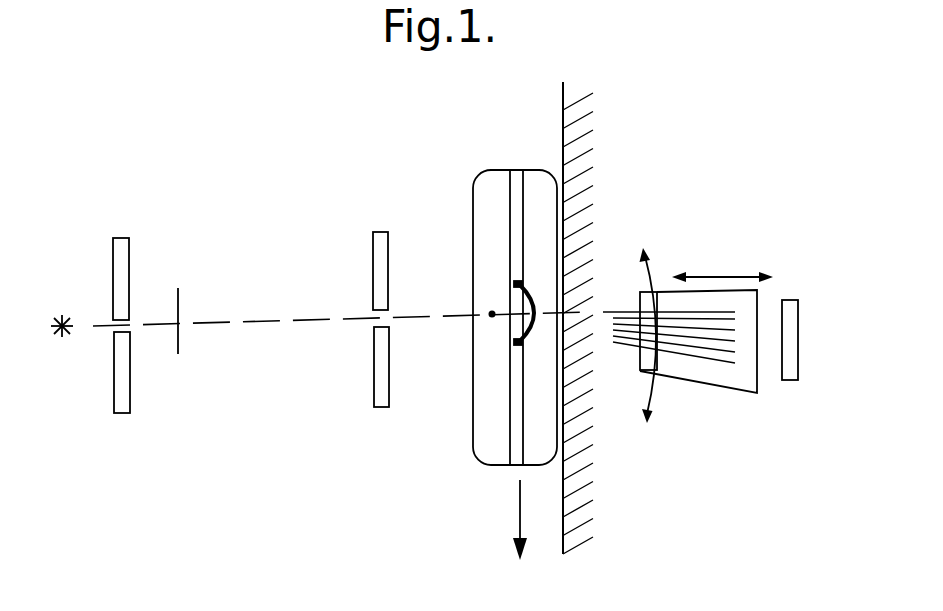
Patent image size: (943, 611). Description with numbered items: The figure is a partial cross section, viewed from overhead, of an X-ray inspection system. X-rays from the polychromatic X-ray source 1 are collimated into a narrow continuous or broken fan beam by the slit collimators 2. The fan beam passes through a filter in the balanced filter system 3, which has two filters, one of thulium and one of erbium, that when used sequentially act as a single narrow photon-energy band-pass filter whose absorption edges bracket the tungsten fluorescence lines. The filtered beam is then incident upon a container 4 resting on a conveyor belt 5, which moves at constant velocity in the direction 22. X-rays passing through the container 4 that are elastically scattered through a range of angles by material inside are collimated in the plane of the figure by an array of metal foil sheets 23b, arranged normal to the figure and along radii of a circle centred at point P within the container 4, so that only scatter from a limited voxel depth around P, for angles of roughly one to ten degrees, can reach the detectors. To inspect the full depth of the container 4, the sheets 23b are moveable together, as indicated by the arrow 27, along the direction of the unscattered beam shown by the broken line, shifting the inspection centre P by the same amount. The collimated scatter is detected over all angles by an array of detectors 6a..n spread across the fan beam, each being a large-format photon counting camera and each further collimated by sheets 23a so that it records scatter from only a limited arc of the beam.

The polychromatic X-ray source 1 is at (65, 316).
The slit collimators 2 is at (129, 264).
The balanced filter system 3 is at (179, 305).
The container 4 is at (503, 170).
The conveyor belt 5 is at (591, 71).
The direction of conveyor belt movement 22 is at (518, 526).
The sheets 23a is at (747, 388).
The array of metal foil sheets 23b is at (720, 363).
The arrow indicating movement of the sheets 27 is at (715, 276).
The array of detectors 6a..n is at (797, 394).